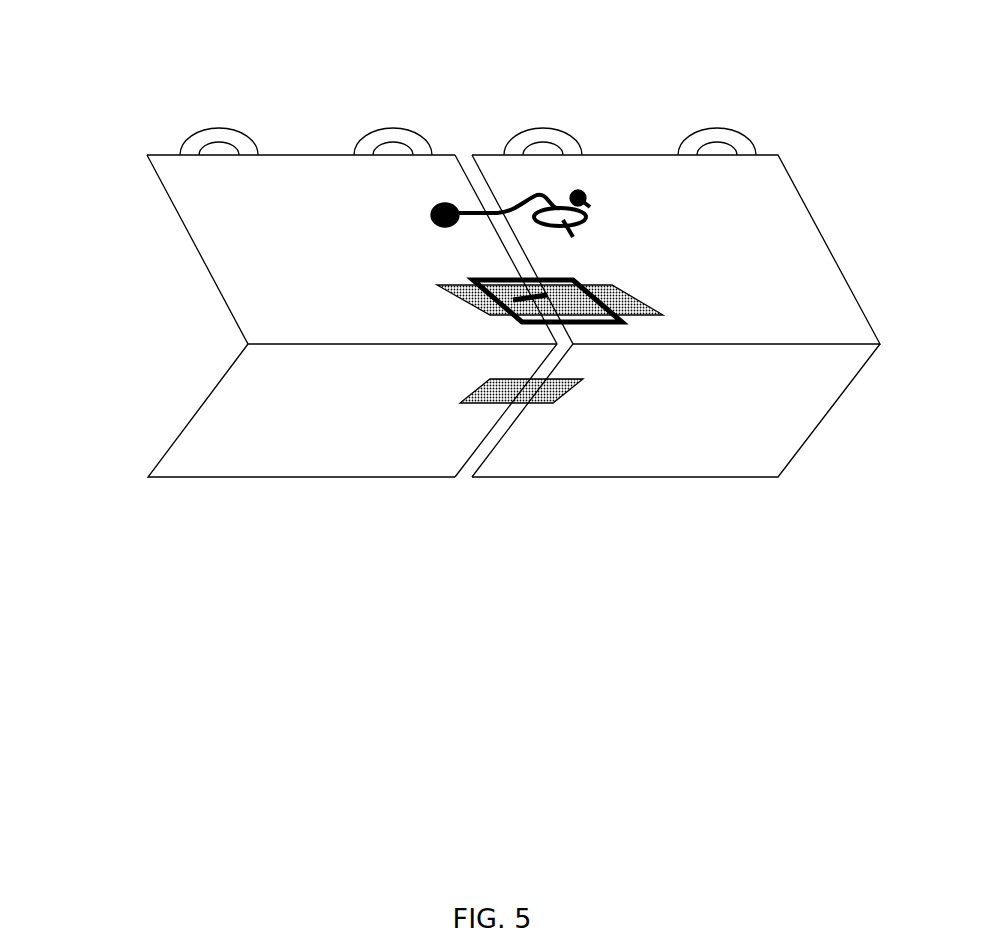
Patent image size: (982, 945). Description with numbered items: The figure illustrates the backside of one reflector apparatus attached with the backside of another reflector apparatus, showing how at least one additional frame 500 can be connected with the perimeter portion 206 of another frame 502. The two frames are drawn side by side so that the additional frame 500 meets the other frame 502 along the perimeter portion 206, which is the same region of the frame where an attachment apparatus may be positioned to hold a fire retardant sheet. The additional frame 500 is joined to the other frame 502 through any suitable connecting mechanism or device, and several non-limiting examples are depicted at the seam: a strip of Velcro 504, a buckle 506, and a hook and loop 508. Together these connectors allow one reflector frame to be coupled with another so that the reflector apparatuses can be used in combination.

The perimeter portion 206 is at (618, 155).
The additional frame 500 is at (282, 240).
The other frame 502 is at (727, 287).
The Velcro 504 is at (573, 390).
The buckle 506 is at (617, 320).
The hook and loop 508 is at (590, 207).